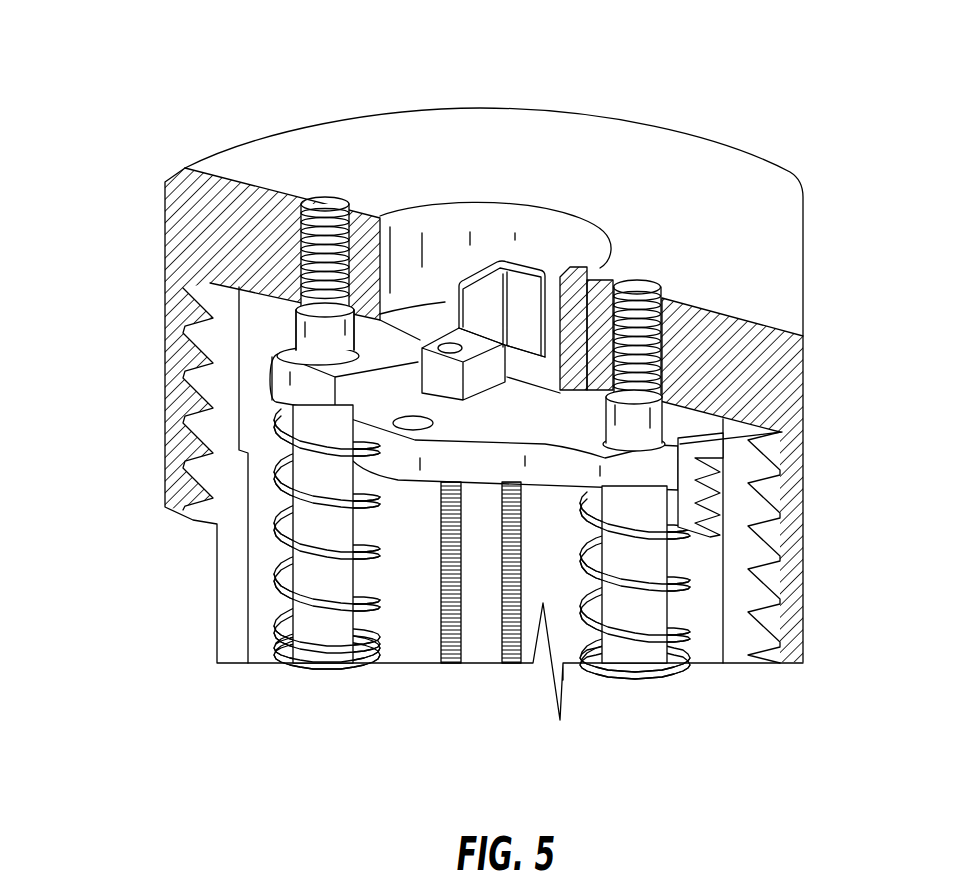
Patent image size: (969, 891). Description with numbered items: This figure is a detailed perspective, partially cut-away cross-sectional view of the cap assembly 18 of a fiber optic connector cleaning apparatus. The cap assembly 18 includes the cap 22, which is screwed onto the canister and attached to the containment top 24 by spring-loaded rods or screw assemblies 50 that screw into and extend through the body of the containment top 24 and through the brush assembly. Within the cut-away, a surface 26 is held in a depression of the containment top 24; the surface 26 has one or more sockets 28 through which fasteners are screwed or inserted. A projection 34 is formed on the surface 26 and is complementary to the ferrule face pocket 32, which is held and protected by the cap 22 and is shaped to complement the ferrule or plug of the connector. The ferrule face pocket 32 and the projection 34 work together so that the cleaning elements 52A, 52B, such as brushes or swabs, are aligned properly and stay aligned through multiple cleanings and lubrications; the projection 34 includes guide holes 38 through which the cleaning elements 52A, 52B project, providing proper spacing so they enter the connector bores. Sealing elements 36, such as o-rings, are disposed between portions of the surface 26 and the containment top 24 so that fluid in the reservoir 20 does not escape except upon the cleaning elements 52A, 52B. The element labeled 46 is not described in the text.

The cap assembly 18 is at (148, 283).
The reservoir 20 is at (424, 620).
The cap 22 is at (683, 177).
The containment top 24 is at (700, 440).
The surface 26 is at (362, 388).
The socket 28 is at (398, 414).
The ferrule face pocket 32 is at (527, 268).
The projection 34 is at (433, 345).
The sealing element 36 is at (283, 348).
The guide hole 38 is at (437, 340).
The screw 46 is at (577, 267).
The spring-loaded rod or screw assembly 50 is at (322, 200).
The cleaning element 52A is at (461, 665).
The cleaning element 52B is at (514, 665).